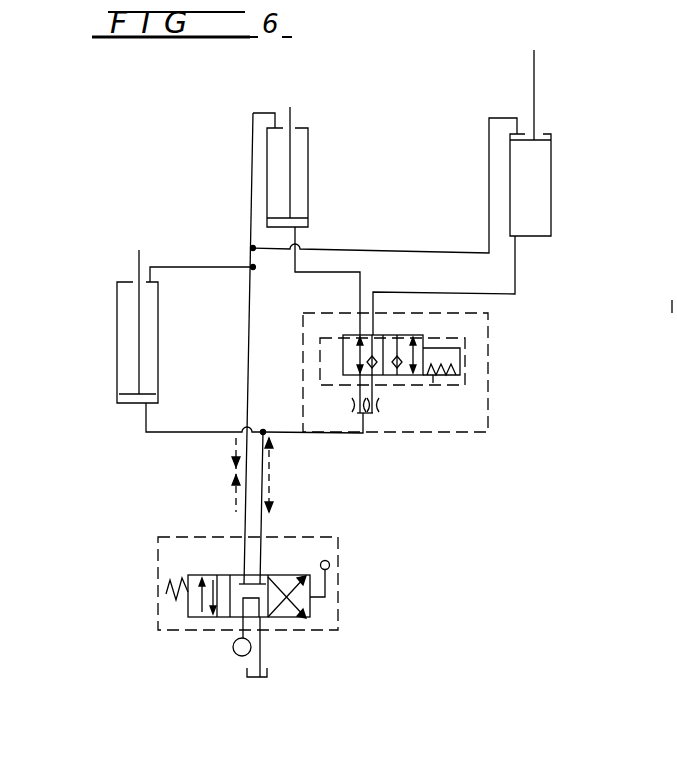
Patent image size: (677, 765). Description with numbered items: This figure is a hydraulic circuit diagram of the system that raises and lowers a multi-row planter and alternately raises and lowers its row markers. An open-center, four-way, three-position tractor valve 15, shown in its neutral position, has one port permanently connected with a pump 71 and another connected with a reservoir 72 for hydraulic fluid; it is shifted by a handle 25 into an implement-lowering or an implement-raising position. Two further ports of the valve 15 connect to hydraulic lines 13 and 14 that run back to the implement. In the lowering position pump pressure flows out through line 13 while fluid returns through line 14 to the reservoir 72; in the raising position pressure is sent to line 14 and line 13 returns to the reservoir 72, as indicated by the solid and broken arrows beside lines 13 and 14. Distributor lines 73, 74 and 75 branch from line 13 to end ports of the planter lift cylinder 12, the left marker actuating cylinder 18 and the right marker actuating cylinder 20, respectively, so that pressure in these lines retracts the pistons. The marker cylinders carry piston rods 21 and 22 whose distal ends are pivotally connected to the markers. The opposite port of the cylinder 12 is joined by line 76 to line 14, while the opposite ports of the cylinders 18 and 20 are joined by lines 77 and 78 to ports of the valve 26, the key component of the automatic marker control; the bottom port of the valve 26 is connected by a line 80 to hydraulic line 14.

The double-acting hydraulic cylinder 12 is at (117, 330).
The hydraulic pressure line 13 is at (247, 520).
The hydraulic pressure line 14 is at (261, 522).
The open-center, four-way, three-position valve 15 is at (341, 620).
The double-acting hydraulic cylinder 18 is at (328, 203).
The double-acting hydraulic cylinder 20 is at (551, 209).
The piston rod 21 is at (292, 113).
The piston rod 22 is at (534, 73).
The handle 25 is at (329, 565).
The valve 26 is at (496, 383).
The pump 71 is at (236, 652).
The reservoir 72 is at (268, 672).
The distributor line 73 is at (215, 264).
The distributor line 74 is at (253, 206).
The distributor line 75 is at (327, 249).
The line 76 is at (173, 432).
The line 77 is at (360, 304).
The line 78 is at (515, 270).
The line 80 is at (313, 434).